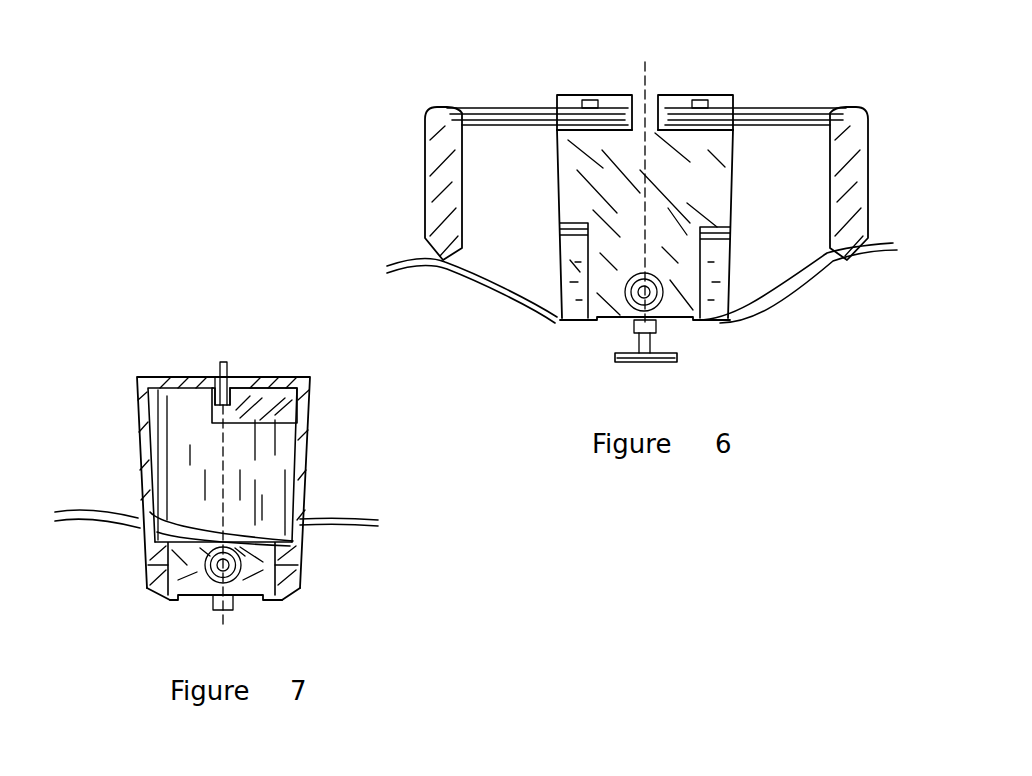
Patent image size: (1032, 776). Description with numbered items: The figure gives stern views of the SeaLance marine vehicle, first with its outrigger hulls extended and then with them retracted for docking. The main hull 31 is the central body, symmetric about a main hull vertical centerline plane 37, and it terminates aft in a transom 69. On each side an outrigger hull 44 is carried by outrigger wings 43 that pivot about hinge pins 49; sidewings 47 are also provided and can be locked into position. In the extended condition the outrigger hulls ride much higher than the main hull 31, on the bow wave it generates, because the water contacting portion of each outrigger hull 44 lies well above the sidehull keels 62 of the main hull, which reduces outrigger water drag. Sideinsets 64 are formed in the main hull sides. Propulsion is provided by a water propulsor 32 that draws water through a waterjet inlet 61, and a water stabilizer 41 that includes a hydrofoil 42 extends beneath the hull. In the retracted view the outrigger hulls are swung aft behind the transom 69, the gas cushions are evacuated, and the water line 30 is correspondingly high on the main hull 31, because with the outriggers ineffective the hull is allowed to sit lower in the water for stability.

In FIG. 6, the water line 30 is at (465, 262).
In FIG. 7, the water line 30 is at (112, 508).
In FIG. 6, the main hull 31 is at (733, 142).
In FIG. 7, the main hull 31 is at (245, 377).
In FIG. 6, the water propulsor 32 is at (633, 275).
In FIG. 7, the water propulsor 32 is at (210, 598).
In FIG. 6, the main hull vertical centerline plane 37 is at (644, 161).
In FIG. 7, the main hull vertical centerline plane 37 is at (222, 367).
In FIG. 6, the water stabilizer 41 is at (657, 340).
In FIG. 6, the hydrofoil 42 is at (627, 362).
In FIG. 6, the outrigger wings 43 is at (461, 106).
In FIG. 6, the outrigger hull 44 is at (461, 150).
In FIG. 7, the outrigger hull 44 is at (183, 448).
In FIG. 6, the sidewings 47 is at (522, 106).
In FIG. 6, the hinge pins 49 is at (597, 100).
In FIG. 6, the waterjet inlet 61 is at (627, 325).
In FIG. 7, the waterjet inlet 61 is at (233, 603).
In FIG. 6, the sidehull keels 62 is at (698, 323).
In FIG. 7, the sidehull keels 62 is at (178, 600).
In FIG. 6, the sideinsets 64 is at (720, 267).
In FIG. 7, the sideinsets 64 is at (283, 562).
In FIG. 6, the transom 69 is at (562, 193).